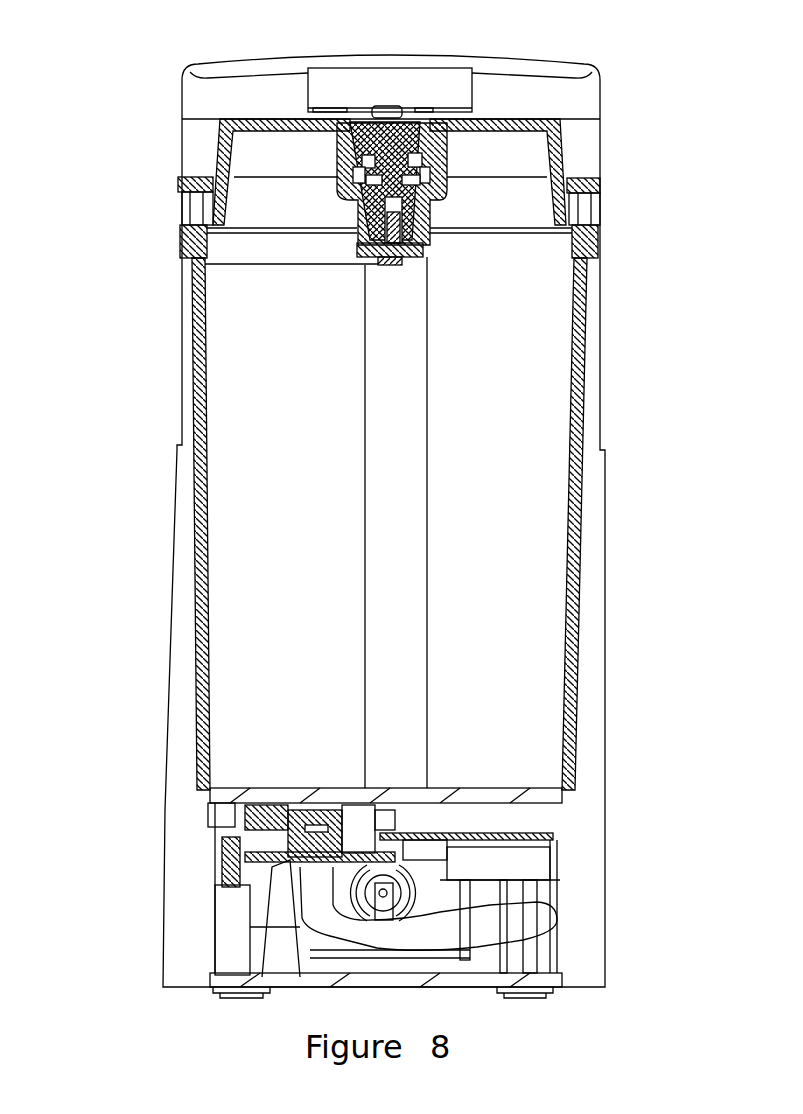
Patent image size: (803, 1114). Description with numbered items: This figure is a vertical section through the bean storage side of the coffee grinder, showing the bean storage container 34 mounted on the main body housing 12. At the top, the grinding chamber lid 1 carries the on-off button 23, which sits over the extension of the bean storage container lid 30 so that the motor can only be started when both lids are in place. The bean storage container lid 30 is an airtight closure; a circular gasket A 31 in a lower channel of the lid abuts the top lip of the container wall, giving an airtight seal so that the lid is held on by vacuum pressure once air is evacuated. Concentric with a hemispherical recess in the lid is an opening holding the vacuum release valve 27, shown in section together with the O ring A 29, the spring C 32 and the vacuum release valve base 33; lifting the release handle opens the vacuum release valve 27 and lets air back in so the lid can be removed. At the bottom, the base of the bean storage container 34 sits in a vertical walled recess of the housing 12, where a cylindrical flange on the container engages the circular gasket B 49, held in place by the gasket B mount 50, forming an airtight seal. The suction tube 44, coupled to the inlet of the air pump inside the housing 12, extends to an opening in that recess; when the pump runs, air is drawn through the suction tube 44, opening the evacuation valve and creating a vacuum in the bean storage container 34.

The grinding chamber lid 1 is at (176, 65).
The on-off button 23 is at (460, 82).
The vacuum release valve 27 is at (461, 131).
The O ring A 29 is at (425, 178).
The spring C 32 is at (441, 216).
The vacuum release valve base 33 is at (435, 260).
The bean storage container 34 is at (592, 459).
The bean storage container lid 30 is at (210, 147).
The gasket A 31 is at (188, 212).
The gasket B 49 is at (267, 840).
The gasket B mount 50 is at (233, 868).
The main body housing 12 is at (185, 901).
The suction tube 44 is at (529, 921).